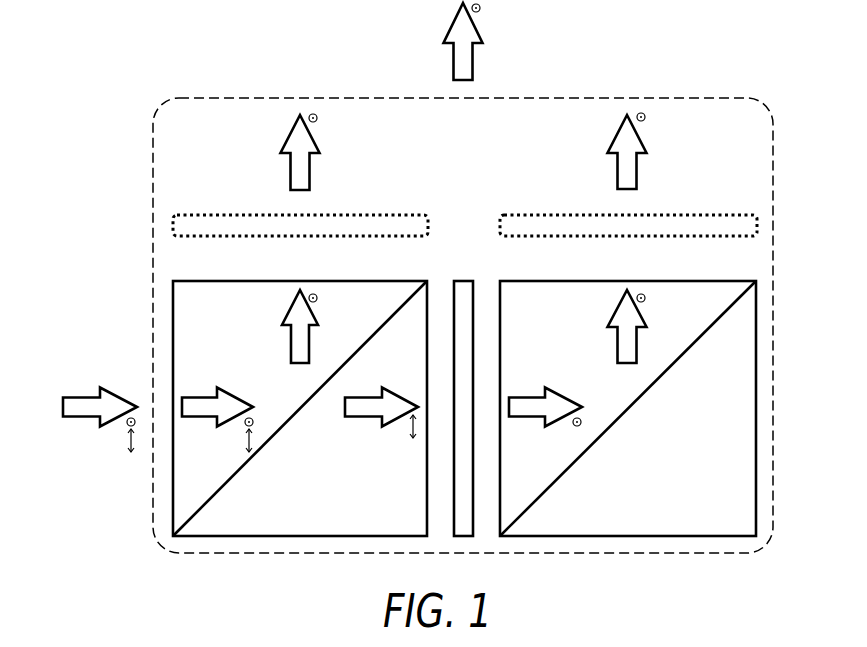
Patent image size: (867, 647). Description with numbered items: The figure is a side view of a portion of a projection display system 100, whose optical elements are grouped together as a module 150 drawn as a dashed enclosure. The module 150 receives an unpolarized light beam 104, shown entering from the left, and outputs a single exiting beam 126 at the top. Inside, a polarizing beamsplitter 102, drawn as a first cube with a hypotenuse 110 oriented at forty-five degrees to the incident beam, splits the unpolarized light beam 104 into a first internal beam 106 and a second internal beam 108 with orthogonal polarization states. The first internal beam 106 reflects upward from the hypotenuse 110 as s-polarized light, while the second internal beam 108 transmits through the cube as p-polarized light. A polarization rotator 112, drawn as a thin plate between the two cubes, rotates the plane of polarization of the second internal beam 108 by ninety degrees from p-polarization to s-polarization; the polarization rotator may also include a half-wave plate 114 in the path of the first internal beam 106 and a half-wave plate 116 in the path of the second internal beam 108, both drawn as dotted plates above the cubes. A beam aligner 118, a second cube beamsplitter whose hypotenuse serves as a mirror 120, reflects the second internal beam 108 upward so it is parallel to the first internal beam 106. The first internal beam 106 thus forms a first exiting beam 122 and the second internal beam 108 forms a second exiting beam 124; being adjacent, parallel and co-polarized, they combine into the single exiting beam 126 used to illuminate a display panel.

The projection display system 100 is at (112, 110).
The module 150 is at (254, 97).
The polarizing beamsplitter 102 is at (334, 280).
The unpolarized light beam 104 is at (83, 394).
The first internal beam 106 is at (290, 305).
The second internal beam 108 is at (400, 394).
The hypotenuse 110 is at (248, 461).
The polarization rotator 112 is at (464, 281).
The half-wave plate 114 is at (334, 215).
The half-wave plate 116 is at (662, 215).
The beam aligner 118 is at (662, 280).
The mirror 120 is at (577, 461).
The first exiting beam 122 is at (290, 163).
The second exiting beam 124 is at (618, 162).
The single exiting beam 126 is at (453, 48).